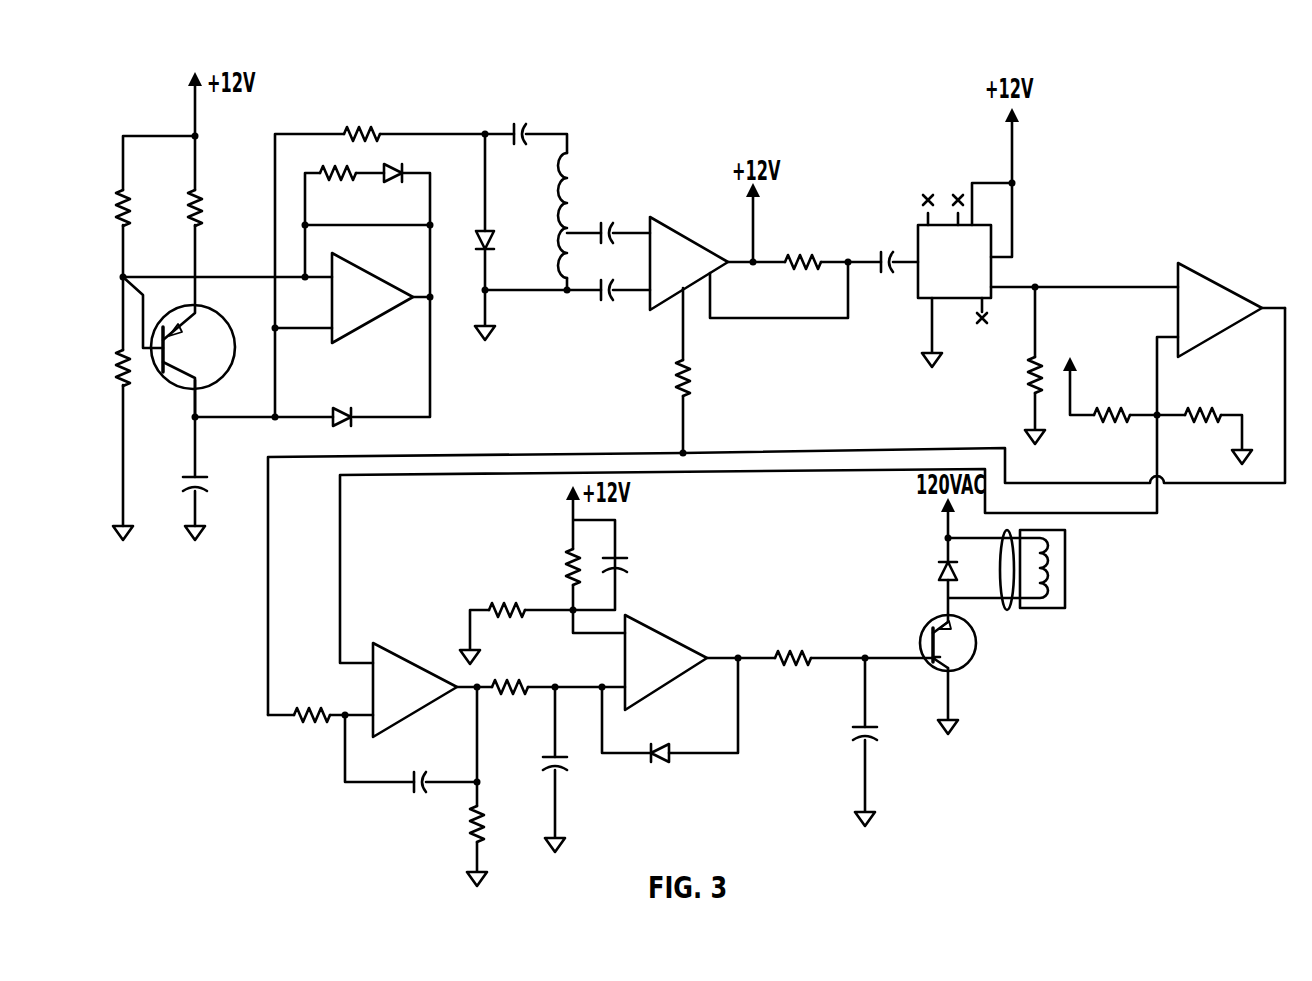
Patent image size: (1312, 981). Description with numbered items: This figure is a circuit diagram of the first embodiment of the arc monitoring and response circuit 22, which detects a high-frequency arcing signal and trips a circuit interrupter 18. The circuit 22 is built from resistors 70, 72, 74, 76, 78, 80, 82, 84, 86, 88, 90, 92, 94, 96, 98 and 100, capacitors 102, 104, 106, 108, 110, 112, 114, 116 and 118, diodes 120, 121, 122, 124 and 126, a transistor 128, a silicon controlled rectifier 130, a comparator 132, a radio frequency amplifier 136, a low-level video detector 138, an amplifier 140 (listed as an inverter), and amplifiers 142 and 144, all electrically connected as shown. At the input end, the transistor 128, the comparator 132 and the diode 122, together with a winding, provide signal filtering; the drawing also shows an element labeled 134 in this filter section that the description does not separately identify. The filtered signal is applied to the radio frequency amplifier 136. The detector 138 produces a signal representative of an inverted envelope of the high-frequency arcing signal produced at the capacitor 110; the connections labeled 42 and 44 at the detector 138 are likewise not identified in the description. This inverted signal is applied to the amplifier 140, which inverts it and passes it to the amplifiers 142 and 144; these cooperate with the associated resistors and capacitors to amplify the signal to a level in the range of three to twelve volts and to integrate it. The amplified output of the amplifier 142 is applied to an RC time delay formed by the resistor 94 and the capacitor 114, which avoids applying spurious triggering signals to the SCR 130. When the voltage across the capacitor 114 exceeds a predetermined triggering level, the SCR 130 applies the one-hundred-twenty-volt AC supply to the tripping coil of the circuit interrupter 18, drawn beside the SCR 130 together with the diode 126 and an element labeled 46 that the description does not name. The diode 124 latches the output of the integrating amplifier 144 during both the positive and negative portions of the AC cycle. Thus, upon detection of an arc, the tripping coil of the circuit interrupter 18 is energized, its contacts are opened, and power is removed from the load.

The circuit interrupter 18 is at (1063, 608).
The arc monitoring and response circuit 22 is at (773, 785).
The first sensor input 42 is at (920, 190).
The second sensor input 44 is at (952, 192).
The relay coil 46 is at (1008, 608).
The resistor 70 is at (123, 190).
The resistor 72 is at (195, 190).
The resistor 74 is at (123, 350).
The resistor 76 is at (360, 127).
The resistor 78 is at (336, 172).
The resistor 80 is at (684, 363).
The resistor 82 is at (798, 254).
The resistor 84 is at (1034, 358).
The resistor 86 is at (1106, 408).
The resistor 88 is at (1196, 408).
The resistor 90 is at (308, 708).
The resistor 92 is at (481, 804).
The resistor 94 is at (506, 680).
The resistor 96 is at (506, 604).
The resistor 98 is at (570, 555).
The resistor 100 is at (789, 652).
The capacitor 102 is at (206, 478).
The capacitor 104 is at (520, 124).
The capacitor 106 is at (612, 220).
The capacitor 108 is at (611, 308).
The capacitor 110 is at (888, 274).
The capacitor 112 is at (424, 770).
The capacitor 114 is at (564, 754).
The capacitor 116 is at (618, 558).
The capacitor 118 is at (872, 724).
The diode 120 is at (348, 408).
The diode 121 is at (412, 165).
The diode 122 is at (496, 232).
The diode 124 is at (667, 750).
The diode 126 is at (938, 562).
The transistor 128 is at (223, 326).
The silicon controlled rectifier 130 is at (960, 636).
The comparator 132 is at (378, 277).
The inductor 134 is at (570, 175).
The radio frequency amplifier 136 is at (687, 232).
The low-level video detector 138 is at (992, 270).
The amplifier 140 is at (1212, 282).
The amplifier 142 is at (416, 668).
The amplifier 144 is at (669, 640).